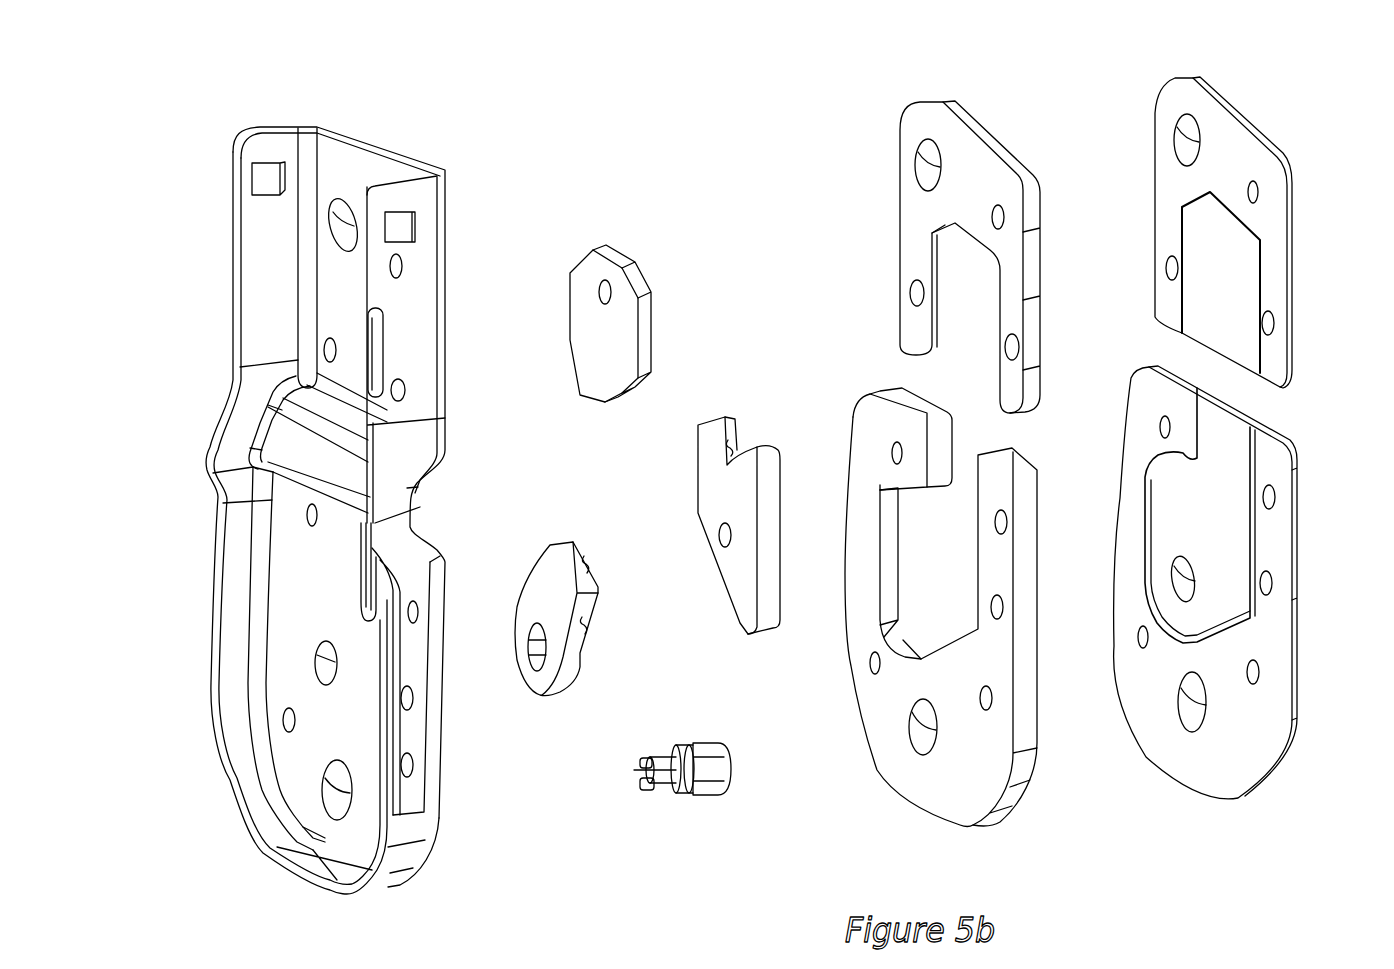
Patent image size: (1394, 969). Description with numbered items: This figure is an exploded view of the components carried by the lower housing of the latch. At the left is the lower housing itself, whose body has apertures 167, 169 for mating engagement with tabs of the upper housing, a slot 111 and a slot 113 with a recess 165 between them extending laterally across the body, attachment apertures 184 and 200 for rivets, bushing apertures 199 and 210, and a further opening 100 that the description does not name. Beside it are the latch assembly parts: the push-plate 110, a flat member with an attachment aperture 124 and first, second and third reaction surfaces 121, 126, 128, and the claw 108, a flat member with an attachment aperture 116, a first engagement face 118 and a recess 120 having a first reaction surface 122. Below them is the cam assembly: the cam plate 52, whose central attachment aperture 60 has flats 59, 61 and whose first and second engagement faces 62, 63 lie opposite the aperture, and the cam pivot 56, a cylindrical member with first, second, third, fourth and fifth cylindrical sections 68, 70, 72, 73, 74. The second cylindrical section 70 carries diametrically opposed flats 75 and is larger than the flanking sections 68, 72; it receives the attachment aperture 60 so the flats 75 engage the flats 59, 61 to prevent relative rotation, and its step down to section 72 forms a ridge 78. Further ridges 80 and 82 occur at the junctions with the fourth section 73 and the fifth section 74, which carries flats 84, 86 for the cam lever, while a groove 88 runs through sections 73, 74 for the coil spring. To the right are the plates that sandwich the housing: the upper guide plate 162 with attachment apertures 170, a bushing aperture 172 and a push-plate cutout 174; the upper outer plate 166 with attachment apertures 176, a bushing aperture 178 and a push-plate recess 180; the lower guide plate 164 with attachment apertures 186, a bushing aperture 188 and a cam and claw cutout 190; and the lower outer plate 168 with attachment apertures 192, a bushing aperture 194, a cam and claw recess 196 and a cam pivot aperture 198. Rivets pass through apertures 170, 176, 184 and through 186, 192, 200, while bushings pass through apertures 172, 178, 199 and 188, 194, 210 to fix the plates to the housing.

The cam plate 52 is at (558, 540).
The cam pivot 56 is at (709, 742).
The flat 59 is at (538, 643).
The central attachment aperture 60 is at (541, 672).
The flat 61 is at (530, 655).
The first engagement face 62 is at (588, 560).
The second engagement face 63 is at (587, 625).
The first cylindrical section 68 is at (728, 758).
The second cylindrical section 70 is at (695, 752).
The third cylindrical section 72 is at (685, 755).
The fourth cylindrical section 73 is at (665, 757).
The fifth cylindrical section 74 is at (645, 758).
The flats 75 is at (712, 770).
The ridge 78 is at (700, 797).
The ridge 80 is at (682, 795).
The ridge 82 is at (663, 790).
The flat 84 is at (644, 790).
The flat 86 is at (636, 770).
The groove 88 is at (642, 780).
The mounting hole 100 is at (289, 710).
The claw 108 is at (714, 418).
The push-plate 110 is at (593, 250).
The slot 111 is at (380, 328).
The slot 113 is at (380, 572).
The attachment aperture 116 is at (720, 535).
The first engagement face 118 is at (718, 583).
The recess 120 is at (725, 470).
The first reaction surface 121 is at (600, 400).
The first reaction surface 122 is at (732, 446).
The attachment aperture 124 is at (602, 292).
The second reaction surface 126 is at (578, 365).
The third reaction surface 128 is at (630, 392).
The upper guide plate 162 is at (980, 162).
The lower guide plate 164 is at (860, 400).
The recess 165 is at (424, 480).
The upper outer plate 166 is at (1250, 150).
The aperture 167 is at (400, 222).
The lower outer plate 168 is at (1138, 378).
The aperture 169 is at (266, 178).
The attachment apertures 170 is at (1000, 215).
The bushing aperture 172 is at (928, 165).
The push-plate cutout 174 is at (970, 282).
The attachment apertures 176 is at (1256, 192).
The bushing aperture 178 is at (1185, 140).
The push-plate recess 180 is at (1213, 250).
The attachment apertures 184 is at (328, 350).
The attachment apertures 186 is at (875, 663).
The bushing aperture 188 is at (920, 737).
The cam and claw cutout 190 is at (968, 625).
The attachment apertures 192 is at (1253, 672).
The bushing aperture 194 is at (1193, 717).
The cam and claw recess 196 is at (1240, 528).
The cam pivot aperture 198 is at (1190, 590).
The bushing aperture 199 is at (347, 215).
The attachment apertures 200 is at (407, 765).
The bushing aperture 210 is at (337, 792).